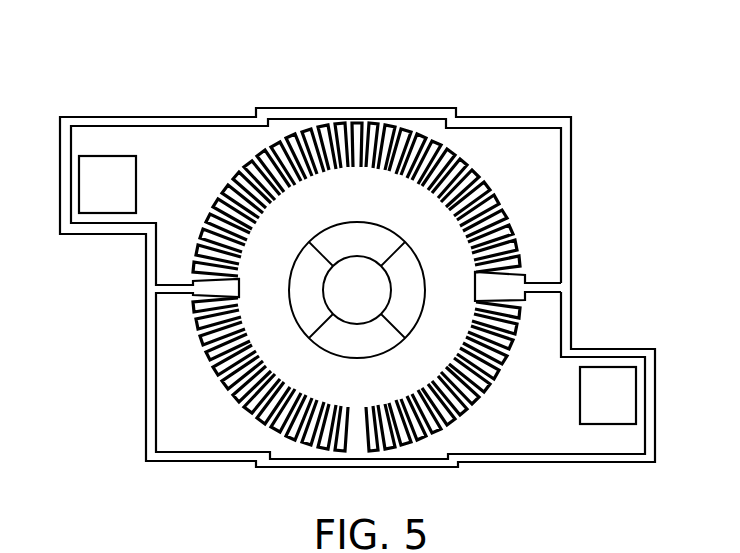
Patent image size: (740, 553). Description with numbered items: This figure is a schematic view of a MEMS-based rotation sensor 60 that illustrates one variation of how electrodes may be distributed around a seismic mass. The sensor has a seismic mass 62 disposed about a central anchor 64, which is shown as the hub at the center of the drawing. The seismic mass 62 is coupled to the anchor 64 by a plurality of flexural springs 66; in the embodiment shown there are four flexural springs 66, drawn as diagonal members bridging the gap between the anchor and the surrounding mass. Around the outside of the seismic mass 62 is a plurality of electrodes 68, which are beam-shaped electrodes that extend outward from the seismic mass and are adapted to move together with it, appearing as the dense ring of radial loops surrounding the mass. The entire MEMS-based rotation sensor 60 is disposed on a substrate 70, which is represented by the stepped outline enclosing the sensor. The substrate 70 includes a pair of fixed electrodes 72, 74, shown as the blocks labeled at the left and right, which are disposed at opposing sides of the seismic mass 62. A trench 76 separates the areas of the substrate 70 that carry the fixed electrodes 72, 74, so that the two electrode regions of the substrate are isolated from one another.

The MEMS-based rotation sensor 60 is at (106, 74).
The seismic mass 62 is at (356, 287).
The central anchor 64 is at (372, 279).
The flexural springs 66 is at (320, 250).
The electrodes 68 is at (494, 192).
The substrate 70 is at (495, 112).
The fixed electrode 72 is at (157, 167).
The fixed electrode 74 is at (542, 373).
The trench 76 is at (528, 275).